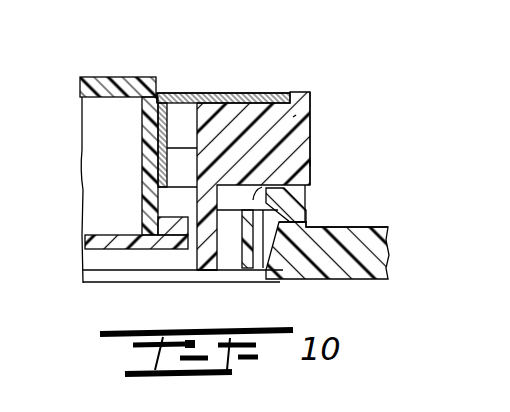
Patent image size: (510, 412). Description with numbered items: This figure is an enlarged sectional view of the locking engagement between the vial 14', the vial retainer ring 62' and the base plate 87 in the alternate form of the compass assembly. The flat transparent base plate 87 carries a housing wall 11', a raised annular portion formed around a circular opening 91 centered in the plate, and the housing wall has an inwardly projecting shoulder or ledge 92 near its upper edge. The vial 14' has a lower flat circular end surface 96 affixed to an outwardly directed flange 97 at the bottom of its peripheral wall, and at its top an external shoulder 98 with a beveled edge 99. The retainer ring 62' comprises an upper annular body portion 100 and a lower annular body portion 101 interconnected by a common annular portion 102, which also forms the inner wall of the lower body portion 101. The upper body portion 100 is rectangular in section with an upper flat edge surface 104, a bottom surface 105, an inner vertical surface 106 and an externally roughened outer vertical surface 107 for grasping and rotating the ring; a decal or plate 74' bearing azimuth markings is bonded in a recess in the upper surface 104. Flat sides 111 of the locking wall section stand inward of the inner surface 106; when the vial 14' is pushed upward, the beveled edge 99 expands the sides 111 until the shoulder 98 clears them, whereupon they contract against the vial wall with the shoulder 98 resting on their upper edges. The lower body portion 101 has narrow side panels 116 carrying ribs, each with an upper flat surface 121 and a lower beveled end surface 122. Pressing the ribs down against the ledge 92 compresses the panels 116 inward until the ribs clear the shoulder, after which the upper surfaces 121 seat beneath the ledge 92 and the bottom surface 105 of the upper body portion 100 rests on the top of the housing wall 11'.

The vial 14' is at (109, 62).
The sides 111 is at (160, 134).
The beveled edge 99 is at (150, 93).
The inner vertical surface 106 is at (170, 150).
The common annular portion 102 is at (197, 197).
The outwardly directed flange 97 is at (173, 216).
The lower flat circular end surface 96 is at (86, 240).
The circular opening 91 is at (278, 272).
The upper flat edge surface 104 is at (272, 92).
The decal or plate 74' is at (223, 72).
The external shoulder 98 is at (152, 97).
The upper annular body portion 100 is at (300, 130).
The outer vertical surface 107 is at (293, 117).
The vial retainer ring 62' is at (347, 138).
The lower annular body portion 101 is at (199, 271).
The upper flat surface 121 is at (310, 163).
The bottom surface 105 is at (268, 185).
The lower beveled end surface 122 is at (262, 267).
The shoulder or ledge 92 is at (306, 194).
The housing wall 11' is at (354, 203).
The side panels 116 is at (306, 222).
The base plate 87 is at (358, 279).